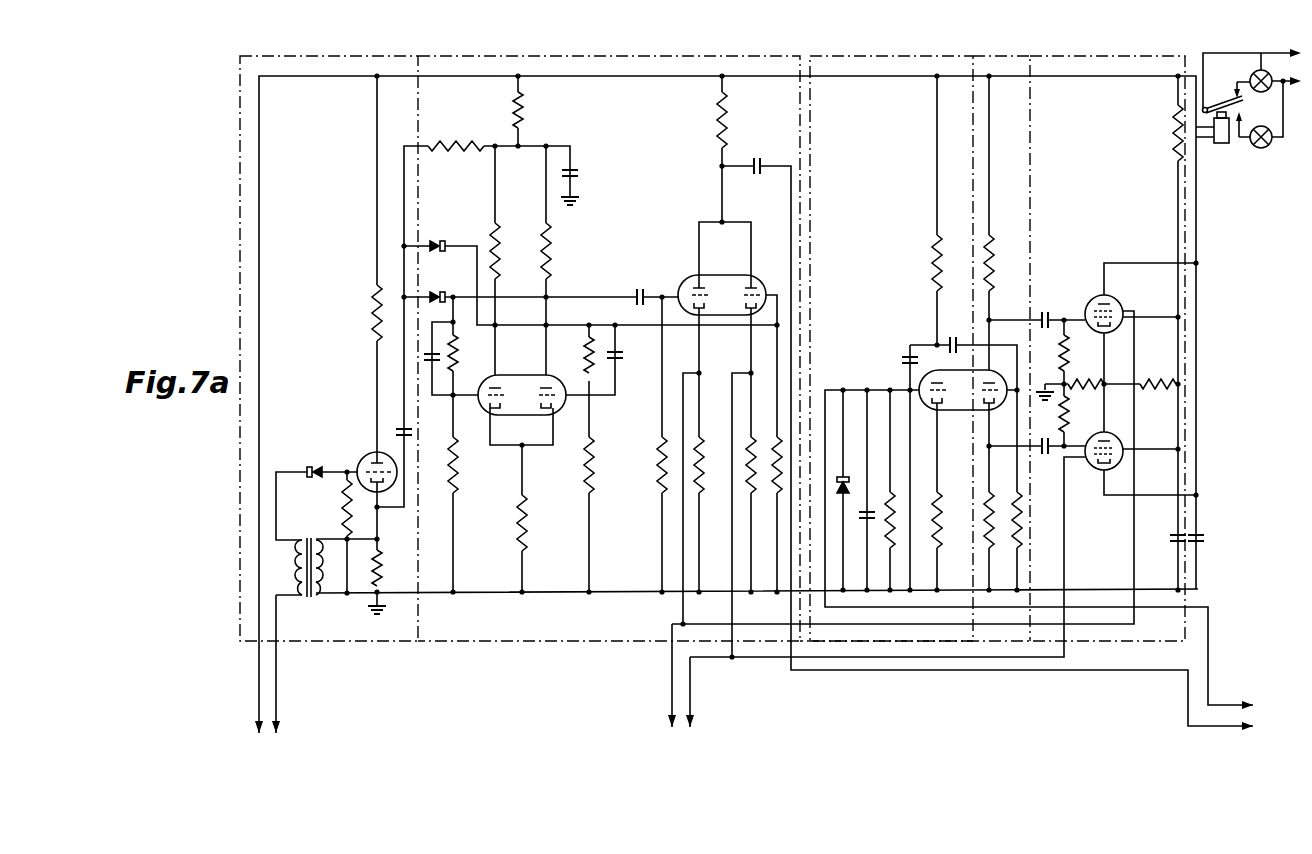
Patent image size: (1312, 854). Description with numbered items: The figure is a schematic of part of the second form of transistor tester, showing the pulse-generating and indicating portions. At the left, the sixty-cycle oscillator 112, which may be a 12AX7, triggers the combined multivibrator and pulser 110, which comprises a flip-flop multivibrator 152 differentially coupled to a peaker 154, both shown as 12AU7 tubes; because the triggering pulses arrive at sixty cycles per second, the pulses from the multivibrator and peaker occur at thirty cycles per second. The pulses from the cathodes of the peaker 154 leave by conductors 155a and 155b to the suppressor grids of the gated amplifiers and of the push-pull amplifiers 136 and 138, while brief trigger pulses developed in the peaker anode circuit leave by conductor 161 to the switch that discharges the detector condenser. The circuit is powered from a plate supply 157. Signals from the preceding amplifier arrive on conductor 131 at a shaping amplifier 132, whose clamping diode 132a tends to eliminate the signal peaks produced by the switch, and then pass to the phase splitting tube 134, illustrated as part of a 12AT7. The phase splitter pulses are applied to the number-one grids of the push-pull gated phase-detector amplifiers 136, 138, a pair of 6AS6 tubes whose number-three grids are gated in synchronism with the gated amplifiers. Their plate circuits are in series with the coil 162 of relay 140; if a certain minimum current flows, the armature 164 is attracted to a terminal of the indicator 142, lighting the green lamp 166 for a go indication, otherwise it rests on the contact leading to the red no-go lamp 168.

The combined multivibrator and pulser 110 is at (601, 48).
The 60 C. P. S. oscillator 112 is at (347, 48).
The conductor 131 is at (1224, 703).
The shaping amplifier 132 is at (881, 48).
The clamping diode 132a is at (847, 476).
The phase splitting tube 134 is at (1016, 48).
The push-pull gated phase-detector amplifier 136 is at (1130, 48).
The push-pull gated phase-detector amplifier 138 is at (1091, 473).
The relay 140 is at (1241, 156).
The indicator 142 is at (1269, 108).
The flip-flop multivibrator 152 is at (536, 362).
The peaker 154 is at (737, 263).
The conductor 155a is at (668, 699).
The conductor 155b is at (693, 705).
The plate supply 157 is at (645, 84).
The conductor 161 is at (1222, 729).
The coil 162 is at (1223, 146).
The armature 164 is at (1218, 105).
The green lamp 166 is at (1261, 70).
The red lamp 168 is at (1262, 149).